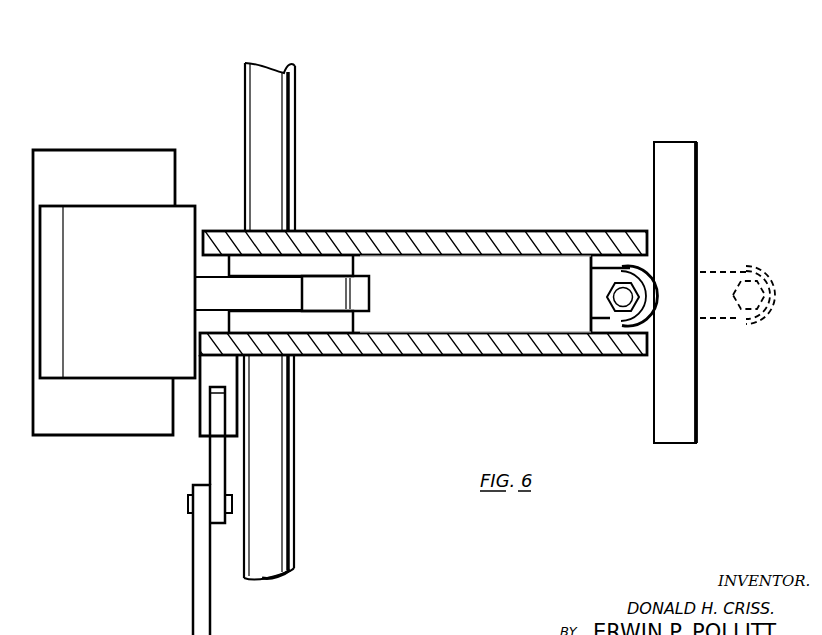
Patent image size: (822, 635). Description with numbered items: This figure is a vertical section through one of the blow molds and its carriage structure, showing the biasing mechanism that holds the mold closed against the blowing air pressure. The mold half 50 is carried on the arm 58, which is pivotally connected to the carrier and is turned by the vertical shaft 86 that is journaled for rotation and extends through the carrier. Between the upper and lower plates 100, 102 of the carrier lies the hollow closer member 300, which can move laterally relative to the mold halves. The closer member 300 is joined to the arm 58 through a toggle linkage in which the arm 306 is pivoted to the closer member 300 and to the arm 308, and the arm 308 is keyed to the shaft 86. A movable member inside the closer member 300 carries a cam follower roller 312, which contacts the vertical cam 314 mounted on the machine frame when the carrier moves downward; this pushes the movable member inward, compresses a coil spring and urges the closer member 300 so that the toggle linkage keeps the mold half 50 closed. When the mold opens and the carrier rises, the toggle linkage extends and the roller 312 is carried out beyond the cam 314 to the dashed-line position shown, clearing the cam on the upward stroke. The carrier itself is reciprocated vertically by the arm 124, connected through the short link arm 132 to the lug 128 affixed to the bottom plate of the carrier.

The mold half 50 is at (103, 160).
The arm 58 is at (203, 289).
The vertical shaft 86 is at (256, 76).
The plate 100 is at (447, 240).
The plate 102 is at (555, 345).
The arm 124 is at (204, 533).
The lug 128 is at (203, 429).
The short link arm 132 is at (213, 459).
The hollow closer member 300 is at (443, 318).
The arm 306 is at (370, 294).
The arm 308 is at (320, 263).
The cam follower roller 312 is at (627, 267).
The vertical cam 314 is at (686, 168).